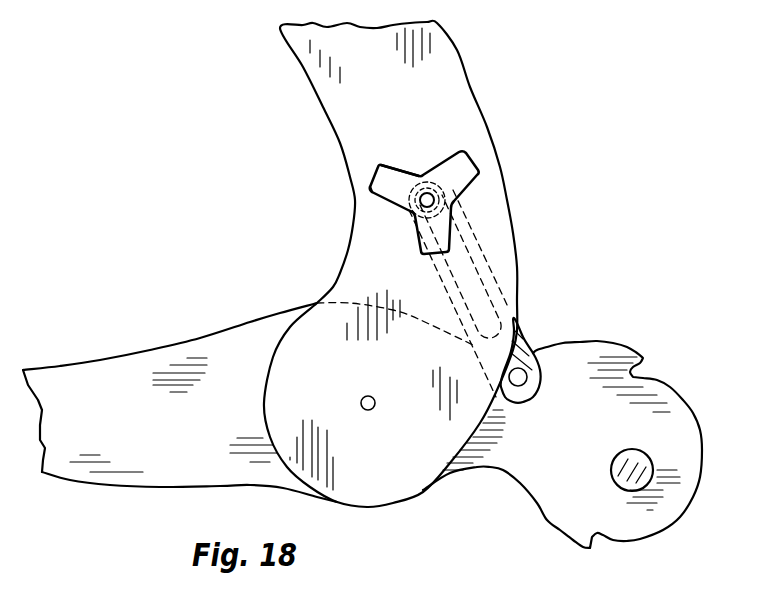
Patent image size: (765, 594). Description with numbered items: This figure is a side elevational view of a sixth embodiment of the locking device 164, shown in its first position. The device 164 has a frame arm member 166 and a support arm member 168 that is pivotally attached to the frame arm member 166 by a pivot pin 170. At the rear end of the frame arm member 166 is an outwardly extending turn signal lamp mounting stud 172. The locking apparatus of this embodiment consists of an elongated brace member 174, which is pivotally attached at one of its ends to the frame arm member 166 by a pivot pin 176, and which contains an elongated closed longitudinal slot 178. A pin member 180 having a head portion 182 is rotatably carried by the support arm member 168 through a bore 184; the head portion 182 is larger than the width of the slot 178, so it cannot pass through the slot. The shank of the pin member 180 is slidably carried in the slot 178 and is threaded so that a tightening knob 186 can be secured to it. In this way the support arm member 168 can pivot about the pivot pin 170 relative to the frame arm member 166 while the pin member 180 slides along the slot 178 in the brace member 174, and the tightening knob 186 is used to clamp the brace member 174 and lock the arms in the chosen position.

The locking device 164 is at (545, 221).
The frame arm member 166 is at (152, 355).
The support arm member 168 is at (463, 57).
The pivot pin 170 is at (374, 407).
The turn signal lamp mounting stud 172 is at (611, 481).
The brace member 174 is at (528, 340).
The pivot pin 176 is at (521, 386).
The slot 178 is at (470, 264).
The pin member 180 is at (422, 188).
The head portion 182 is at (431, 186).
The bore 184 is at (420, 208).
The tightening knob 186 is at (371, 173).